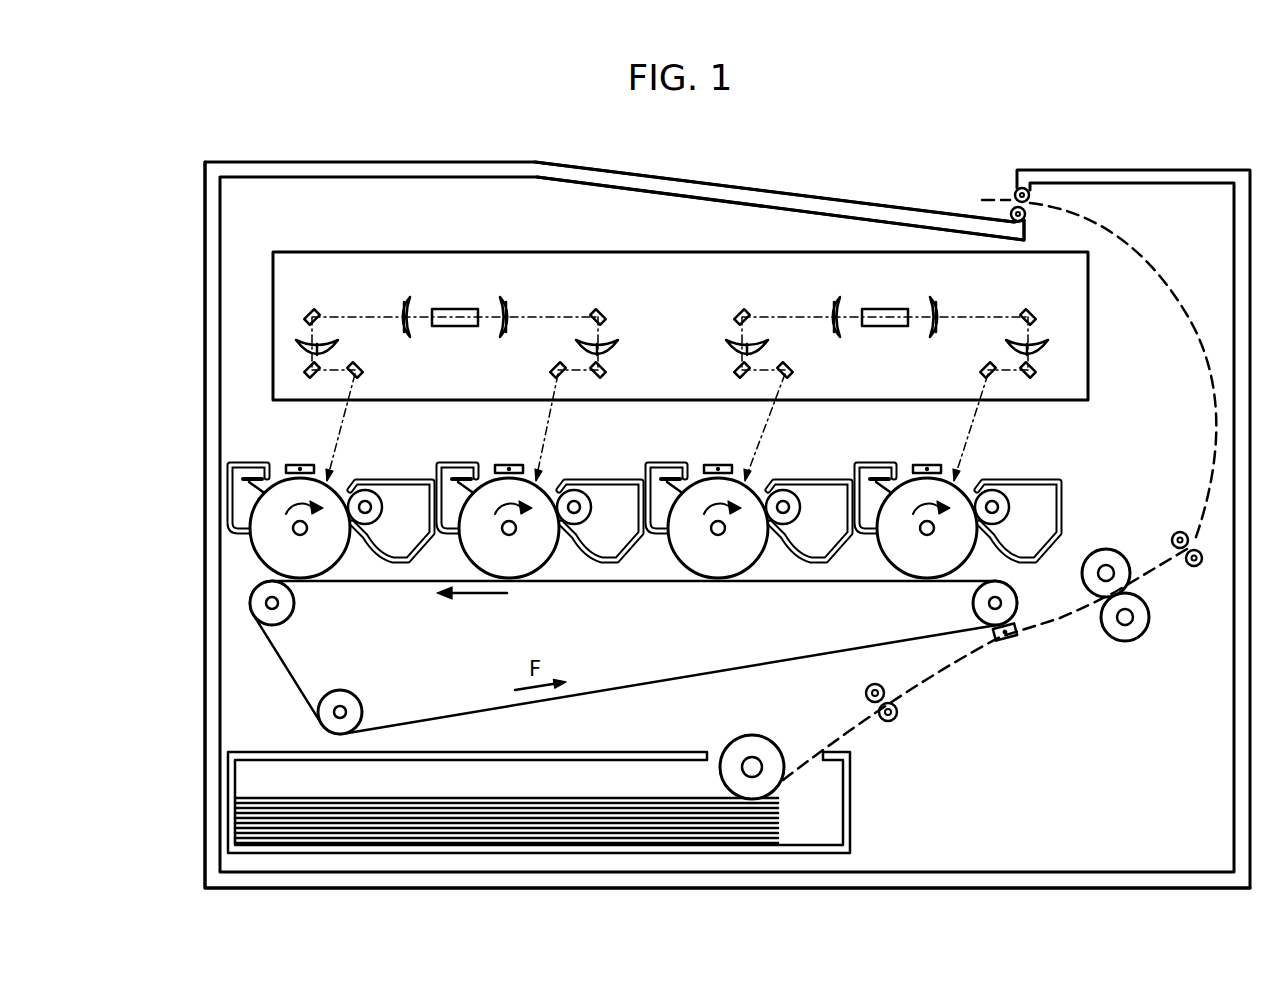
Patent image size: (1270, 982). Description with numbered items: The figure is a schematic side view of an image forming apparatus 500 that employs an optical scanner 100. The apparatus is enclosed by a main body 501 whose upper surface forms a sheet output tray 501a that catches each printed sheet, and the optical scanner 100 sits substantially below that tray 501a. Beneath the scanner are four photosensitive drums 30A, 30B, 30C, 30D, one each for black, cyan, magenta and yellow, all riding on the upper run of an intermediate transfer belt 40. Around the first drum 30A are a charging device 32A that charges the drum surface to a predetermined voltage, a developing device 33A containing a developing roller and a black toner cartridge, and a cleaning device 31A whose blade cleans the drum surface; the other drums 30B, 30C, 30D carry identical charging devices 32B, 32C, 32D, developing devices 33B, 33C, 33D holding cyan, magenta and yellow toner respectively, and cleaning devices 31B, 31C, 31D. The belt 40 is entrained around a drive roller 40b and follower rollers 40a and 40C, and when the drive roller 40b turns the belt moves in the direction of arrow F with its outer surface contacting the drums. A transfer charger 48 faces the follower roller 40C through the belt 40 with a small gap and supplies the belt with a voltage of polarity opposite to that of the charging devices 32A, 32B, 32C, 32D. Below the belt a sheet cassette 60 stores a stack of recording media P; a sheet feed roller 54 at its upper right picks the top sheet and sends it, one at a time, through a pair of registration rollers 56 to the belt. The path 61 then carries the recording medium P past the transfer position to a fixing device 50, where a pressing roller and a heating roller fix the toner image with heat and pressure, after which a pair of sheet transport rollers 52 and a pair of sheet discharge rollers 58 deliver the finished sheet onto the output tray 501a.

The image forming apparatus 500 is at (186, 295).
The main body 501 is at (393, 161).
The sheet output tray 501a is at (888, 203).
The optical scanner 100 is at (468, 252).
The pair of sheet discharge rollers 58 is at (1009, 186).
The sheet conveyance path 61 is at (1140, 257).
The photosensitive drum 30A is at (350, 540).
The photosensitive drum 30B is at (526, 529).
The photosensitive drum 30C is at (735, 529).
The photosensitive drum 30D is at (944, 529).
The cleaning device 31A is at (245, 535).
The cleaning device 31B is at (453, 521).
The cleaning device 31C is at (662, 521).
The cleaning device 31D is at (871, 521).
The charging device 32A is at (300, 462).
The charging device 32B is at (513, 447).
The charging device 32C is at (722, 447).
The charging device 32D is at (932, 447).
The developing device 33A is at (393, 482).
The developing device 33B is at (599, 498).
The developing device 33C is at (808, 498).
The developing device 33D is at (1017, 498).
The intermediate transfer belt 40 is at (295, 684).
The follower roller 40a is at (294, 605).
The drive roller 40b is at (352, 695).
The follower roller 40C is at (973, 604).
The transfer charger 48 is at (1010, 640).
The fixing device 50 is at (1097, 592).
The pair of sheet transport rollers 52 is at (1178, 565).
The sheet feed roller 54 is at (765, 735).
The pair of registration rollers 56 is at (872, 720).
The sheet cassette 60 is at (850, 827).
The recording medium P is at (490, 798).